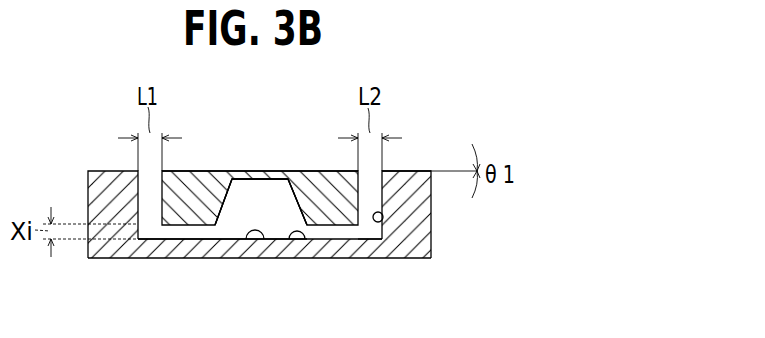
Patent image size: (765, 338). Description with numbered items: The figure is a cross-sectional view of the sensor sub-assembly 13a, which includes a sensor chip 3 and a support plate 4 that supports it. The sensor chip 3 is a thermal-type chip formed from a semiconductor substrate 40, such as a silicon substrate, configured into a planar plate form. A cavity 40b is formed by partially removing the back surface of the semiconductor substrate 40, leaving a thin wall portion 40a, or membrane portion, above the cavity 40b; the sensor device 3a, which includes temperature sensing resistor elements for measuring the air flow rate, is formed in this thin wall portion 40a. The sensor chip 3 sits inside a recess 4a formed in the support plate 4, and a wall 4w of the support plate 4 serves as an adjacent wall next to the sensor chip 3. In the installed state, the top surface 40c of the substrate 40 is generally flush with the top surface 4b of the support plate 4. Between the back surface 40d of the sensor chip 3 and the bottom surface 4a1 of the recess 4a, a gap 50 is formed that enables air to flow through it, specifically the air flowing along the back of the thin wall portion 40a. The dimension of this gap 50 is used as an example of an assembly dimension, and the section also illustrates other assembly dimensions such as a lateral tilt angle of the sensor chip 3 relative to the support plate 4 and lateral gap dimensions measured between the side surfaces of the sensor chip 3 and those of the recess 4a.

The sensor chip 3 is at (260, 149).
The sensor device 3a is at (259, 179).
The support plate 4 is at (277, 196).
The recess 4a is at (246, 242).
The bottom surface of the recess 4a1 is at (300, 240).
The top surface of the support plate 4b is at (103, 171).
The wall of the support plate 4w is at (367, 258).
The sensor sub-assembly 13a is at (418, 98).
The semiconductor substrate 40 is at (209, 171).
The thin wall portion 40a is at (268, 171).
The cavity 40b is at (204, 240).
The top surface of the substrate 40c is at (187, 171).
The back surface of the sensor chip 40d is at (177, 228).
The gap 50 is at (358, 230).